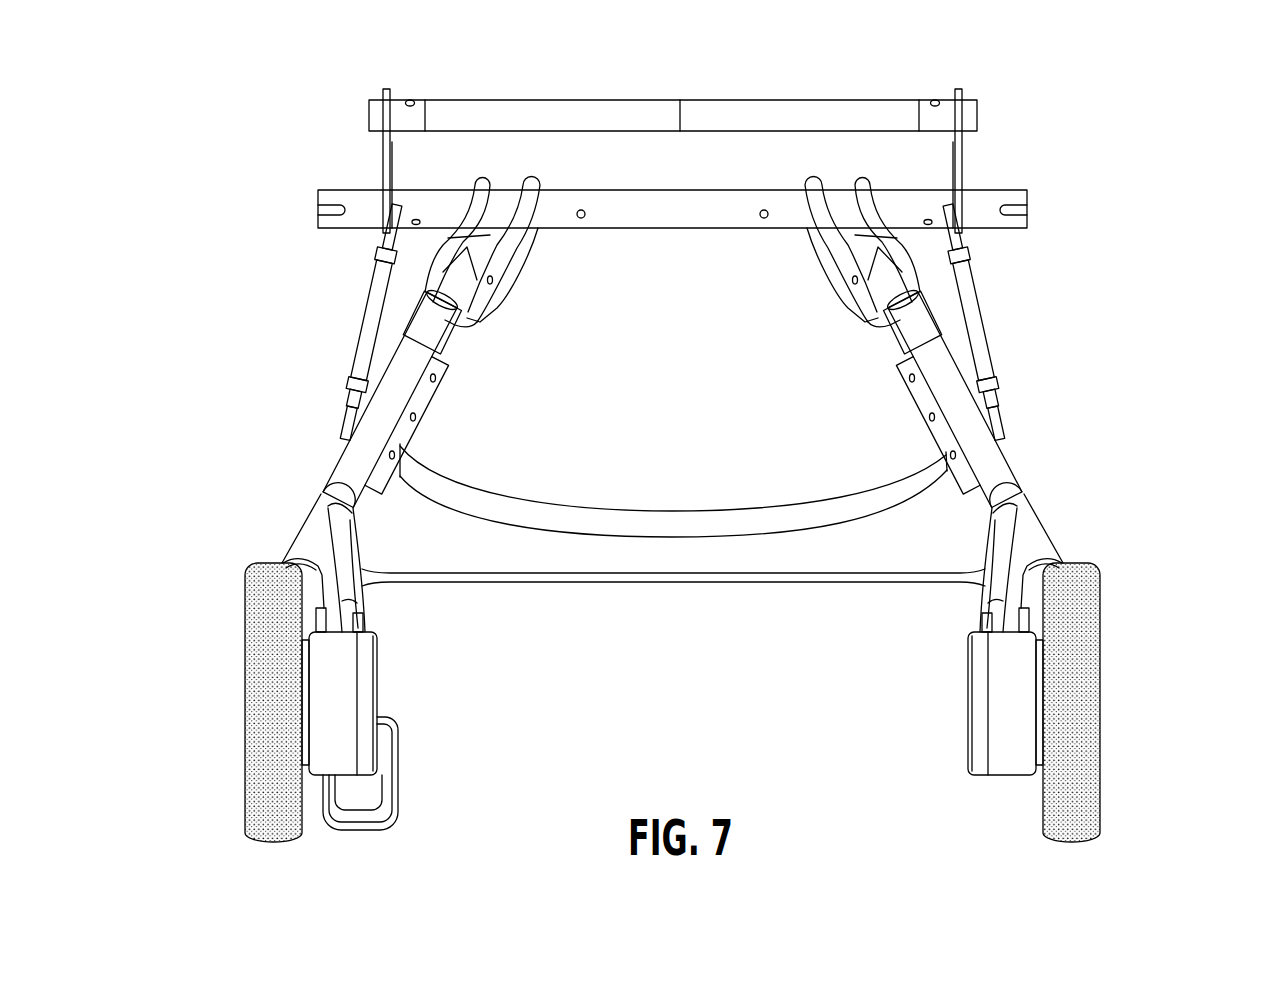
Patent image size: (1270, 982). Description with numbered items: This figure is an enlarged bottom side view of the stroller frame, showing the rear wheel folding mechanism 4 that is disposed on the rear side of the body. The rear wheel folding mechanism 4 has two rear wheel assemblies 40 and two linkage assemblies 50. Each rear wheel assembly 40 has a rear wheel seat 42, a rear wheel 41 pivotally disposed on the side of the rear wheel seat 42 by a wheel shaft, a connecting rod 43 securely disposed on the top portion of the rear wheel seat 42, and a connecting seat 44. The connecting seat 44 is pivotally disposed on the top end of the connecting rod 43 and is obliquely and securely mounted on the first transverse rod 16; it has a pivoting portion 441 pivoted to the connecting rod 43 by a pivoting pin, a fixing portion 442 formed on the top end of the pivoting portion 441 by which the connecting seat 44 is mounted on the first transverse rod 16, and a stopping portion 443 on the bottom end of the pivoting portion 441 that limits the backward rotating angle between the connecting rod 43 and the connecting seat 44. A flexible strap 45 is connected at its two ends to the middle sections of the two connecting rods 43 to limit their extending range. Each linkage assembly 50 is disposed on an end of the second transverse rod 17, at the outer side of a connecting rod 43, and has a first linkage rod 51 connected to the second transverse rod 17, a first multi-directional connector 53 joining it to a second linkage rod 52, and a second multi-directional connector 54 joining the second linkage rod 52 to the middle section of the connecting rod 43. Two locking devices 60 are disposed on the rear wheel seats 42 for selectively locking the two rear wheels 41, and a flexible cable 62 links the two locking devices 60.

The rear wheel folding mechanism 4 is at (1152, 606).
The first transverse rod 16 is at (625, 222).
The second transverse rod 17 is at (622, 116).
The rear wheel assembly 40 is at (665, 462).
The rear wheel 41 is at (263, 705).
The rear wheel seat 42 is at (1025, 548).
The connecting rod 43 is at (1003, 485).
The connecting seat 44 is at (831, 258).
The pivoting portion 441 is at (855, 290).
The fixing portion 442 is at (808, 184).
The stopping portion 443 is at (877, 335).
The flexible strap 45 is at (616, 525).
The linkage assembly 50 is at (680, 322).
The first linkage rod 51 is at (960, 172).
The second linkage rod 52 is at (976, 322).
The first multi-directional connector 53 is at (958, 222).
The second multi-directional connector 54 is at (1008, 436).
The locking device 60 is at (392, 686).
The cable 62 is at (745, 580).